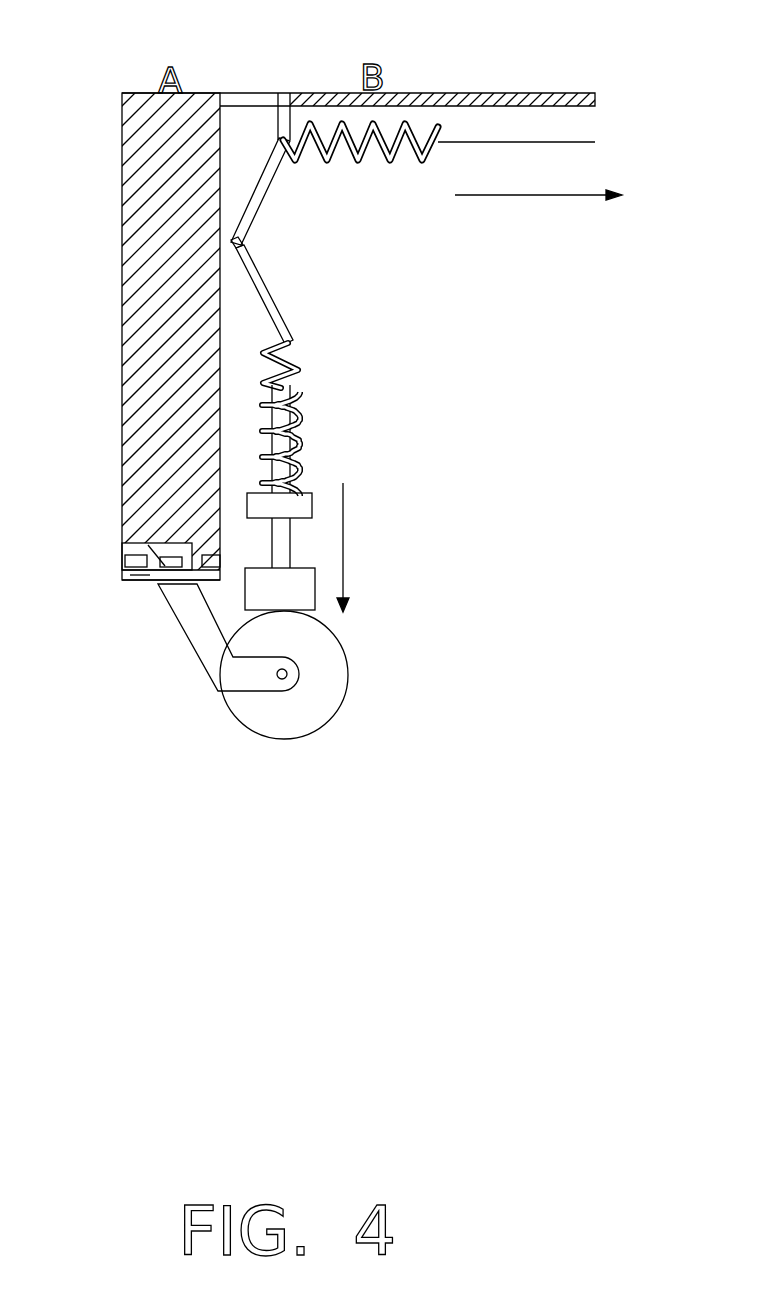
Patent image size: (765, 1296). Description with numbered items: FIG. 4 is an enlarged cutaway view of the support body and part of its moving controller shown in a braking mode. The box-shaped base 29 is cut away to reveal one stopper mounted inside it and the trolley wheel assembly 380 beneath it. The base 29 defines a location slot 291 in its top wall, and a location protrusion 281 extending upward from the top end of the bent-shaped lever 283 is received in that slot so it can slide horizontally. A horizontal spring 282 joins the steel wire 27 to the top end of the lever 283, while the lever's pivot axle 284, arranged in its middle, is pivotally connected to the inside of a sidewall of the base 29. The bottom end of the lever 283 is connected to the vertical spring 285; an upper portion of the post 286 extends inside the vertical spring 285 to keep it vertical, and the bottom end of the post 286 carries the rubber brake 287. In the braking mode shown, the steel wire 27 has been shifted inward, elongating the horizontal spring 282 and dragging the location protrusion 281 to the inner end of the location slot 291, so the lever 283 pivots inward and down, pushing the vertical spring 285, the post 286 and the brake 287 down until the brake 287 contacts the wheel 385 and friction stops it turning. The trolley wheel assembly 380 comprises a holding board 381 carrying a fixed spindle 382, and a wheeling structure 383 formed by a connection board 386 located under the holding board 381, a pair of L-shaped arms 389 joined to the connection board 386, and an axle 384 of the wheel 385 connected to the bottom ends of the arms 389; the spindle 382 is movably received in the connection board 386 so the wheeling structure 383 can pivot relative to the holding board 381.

The steel wire 27 is at (595, 142).
The base 29 is at (155, 425).
The location slot 291 is at (248, 106).
The location protrusion 281 is at (284, 93).
The horizontal spring 282 is at (424, 134).
The lever 283 is at (258, 200).
The pivot axle 284 is at (240, 247).
The vertical spring 285 is at (300, 376).
The post 286 is at (302, 503).
The brake 287 is at (300, 594).
The trolley wheel assembly 380 is at (155, 617).
The holding board 381 is at (130, 575).
The spindle 382 is at (135, 553).
The wheeling structure 383 is at (197, 685).
The axle 384 is at (288, 678).
The wheel 385 is at (328, 675).
The connection board 386 is at (160, 585).
The arm 389 is at (196, 634).